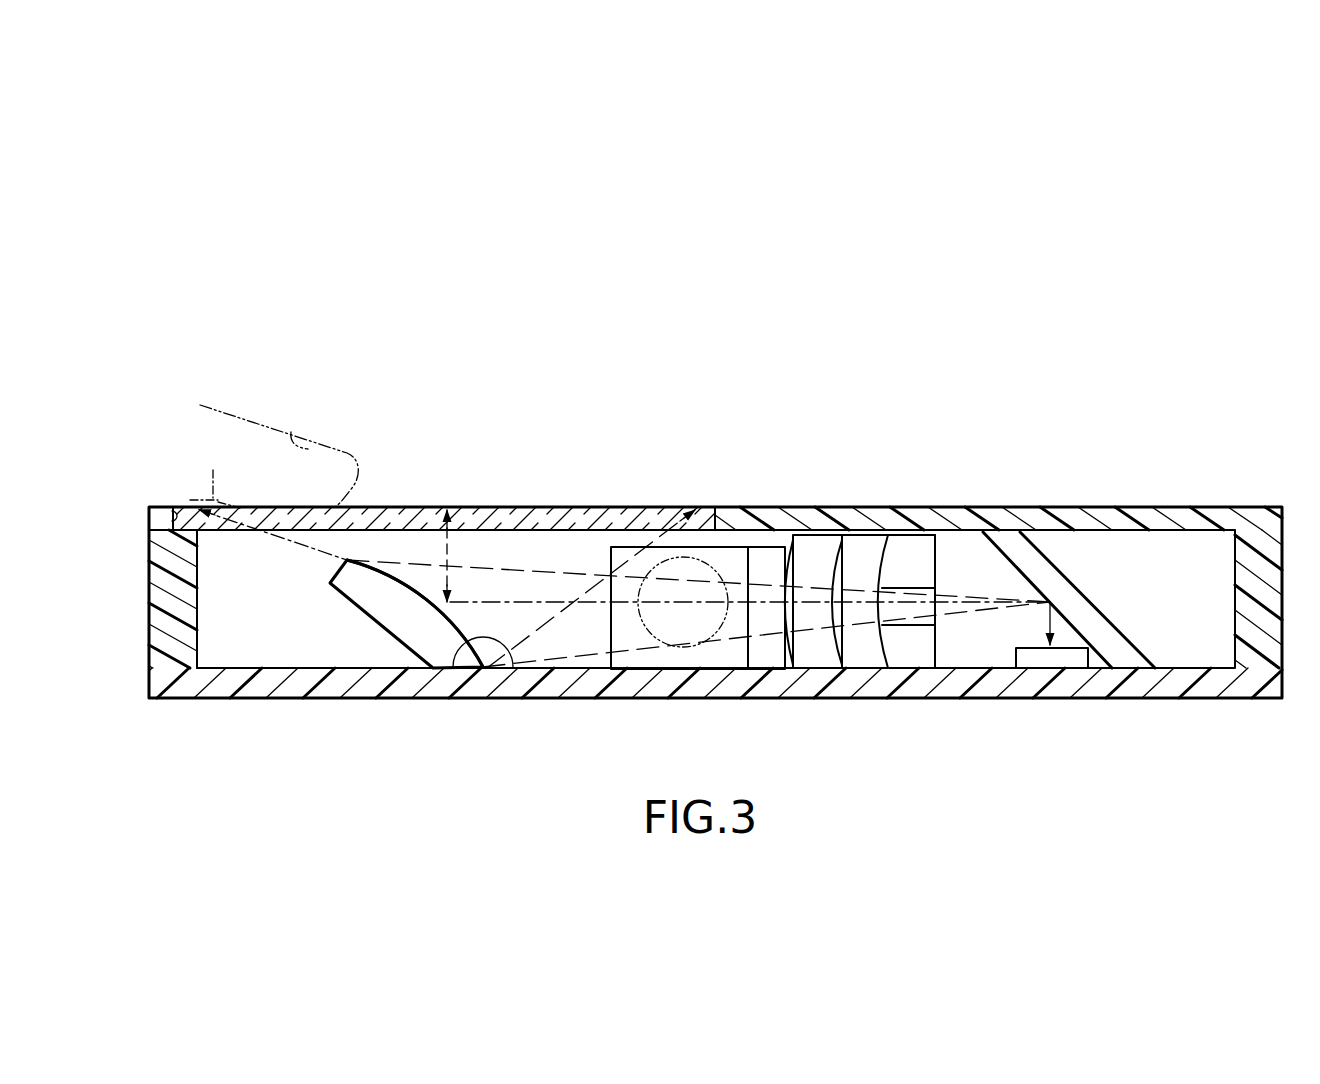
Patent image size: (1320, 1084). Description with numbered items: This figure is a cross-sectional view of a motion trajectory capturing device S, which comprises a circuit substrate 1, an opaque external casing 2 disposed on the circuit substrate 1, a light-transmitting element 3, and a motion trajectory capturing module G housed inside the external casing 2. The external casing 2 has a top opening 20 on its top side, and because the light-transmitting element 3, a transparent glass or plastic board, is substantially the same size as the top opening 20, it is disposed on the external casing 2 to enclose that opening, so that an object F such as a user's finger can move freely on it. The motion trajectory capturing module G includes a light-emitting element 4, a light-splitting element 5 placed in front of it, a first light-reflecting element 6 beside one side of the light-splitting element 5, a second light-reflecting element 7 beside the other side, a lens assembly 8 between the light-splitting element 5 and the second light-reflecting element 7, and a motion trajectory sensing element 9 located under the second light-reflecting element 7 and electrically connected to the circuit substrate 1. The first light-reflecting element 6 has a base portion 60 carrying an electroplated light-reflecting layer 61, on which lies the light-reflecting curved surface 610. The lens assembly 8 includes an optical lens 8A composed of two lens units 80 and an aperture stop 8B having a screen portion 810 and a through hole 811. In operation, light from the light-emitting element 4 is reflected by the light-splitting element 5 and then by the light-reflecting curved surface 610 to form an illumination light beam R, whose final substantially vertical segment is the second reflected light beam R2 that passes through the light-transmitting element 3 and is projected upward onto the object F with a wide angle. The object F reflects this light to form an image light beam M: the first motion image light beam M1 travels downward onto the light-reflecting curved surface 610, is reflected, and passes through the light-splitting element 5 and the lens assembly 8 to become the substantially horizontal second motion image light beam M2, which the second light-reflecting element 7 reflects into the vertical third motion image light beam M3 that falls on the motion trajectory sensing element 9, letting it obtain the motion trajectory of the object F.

The circuit substrate 1 is at (213, 700).
The external casing 2 is at (146, 585).
The top opening 20 is at (182, 512).
The light-transmitting element 3 is at (657, 505).
The light-emitting element 4 is at (705, 560).
The light-splitting element 5 is at (666, 663).
The first light-reflecting element 6 is at (379, 633).
The base portion 60 is at (413, 638).
The electroplated light-reflecting layer 61 is at (453, 640).
The light-reflecting curved surface 610 is at (512, 638).
The motion trajectory capturing module G is at (335, 640).
The second light-reflecting element 7 is at (1075, 583).
The lens assembly 8 is at (820, 399).
The optical lens 8A is at (790, 449).
The aperture stop 8B is at (905, 560).
The lens unit 80 is at (863, 550).
The screen portion 810 is at (895, 648).
The through hole 811 is at (922, 622).
The motion trajectory sensing element 9 is at (1072, 660).
The image light beam M is at (945, 155).
The first motion image light beam M1 is at (307, 547).
The second motion image light beam M2 is at (975, 603).
The third motion image light beam M3 is at (1057, 627).
The object F is at (318, 436).
The illumination light beam R is at (263, 358).
The second reflected light beam R2 is at (247, 507).
The motion trajectory capturing device S is at (1180, 418).